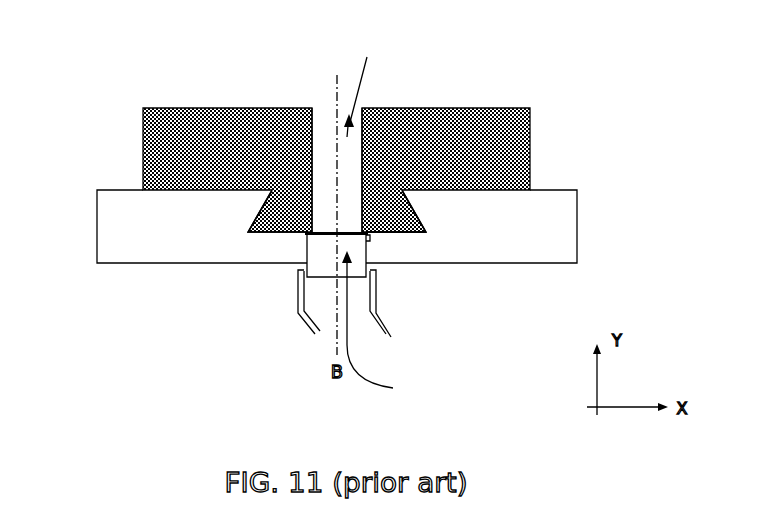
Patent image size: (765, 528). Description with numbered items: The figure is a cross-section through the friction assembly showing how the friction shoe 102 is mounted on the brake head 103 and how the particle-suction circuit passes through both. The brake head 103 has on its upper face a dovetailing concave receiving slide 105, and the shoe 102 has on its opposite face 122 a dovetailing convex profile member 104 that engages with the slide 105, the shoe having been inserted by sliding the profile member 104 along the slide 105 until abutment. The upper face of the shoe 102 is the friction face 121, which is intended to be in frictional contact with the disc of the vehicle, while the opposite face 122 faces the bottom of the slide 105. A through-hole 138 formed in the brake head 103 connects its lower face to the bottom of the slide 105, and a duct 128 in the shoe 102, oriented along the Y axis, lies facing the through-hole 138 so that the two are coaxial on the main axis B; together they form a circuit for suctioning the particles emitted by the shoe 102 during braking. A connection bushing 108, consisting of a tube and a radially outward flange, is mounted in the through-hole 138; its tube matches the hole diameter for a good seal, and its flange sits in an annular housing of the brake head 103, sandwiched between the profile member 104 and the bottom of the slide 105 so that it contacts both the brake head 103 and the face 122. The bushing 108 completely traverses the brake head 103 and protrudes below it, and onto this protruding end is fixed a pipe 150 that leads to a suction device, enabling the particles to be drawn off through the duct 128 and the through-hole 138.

The friction shoe 102 is at (205, 117).
The brake head 103 is at (132, 200).
The dovetailing convex profile member 104 is at (252, 213).
The dovetailing concave receiving slide 105 is at (398, 224).
The connection bushing 108 is at (360, 245).
The friction face 121 is at (434, 110).
The opposite face 122 is at (392, 240).
The duct 128 is at (368, 85).
The through-hole 138 is at (387, 326).
The pipe 150 is at (381, 322).